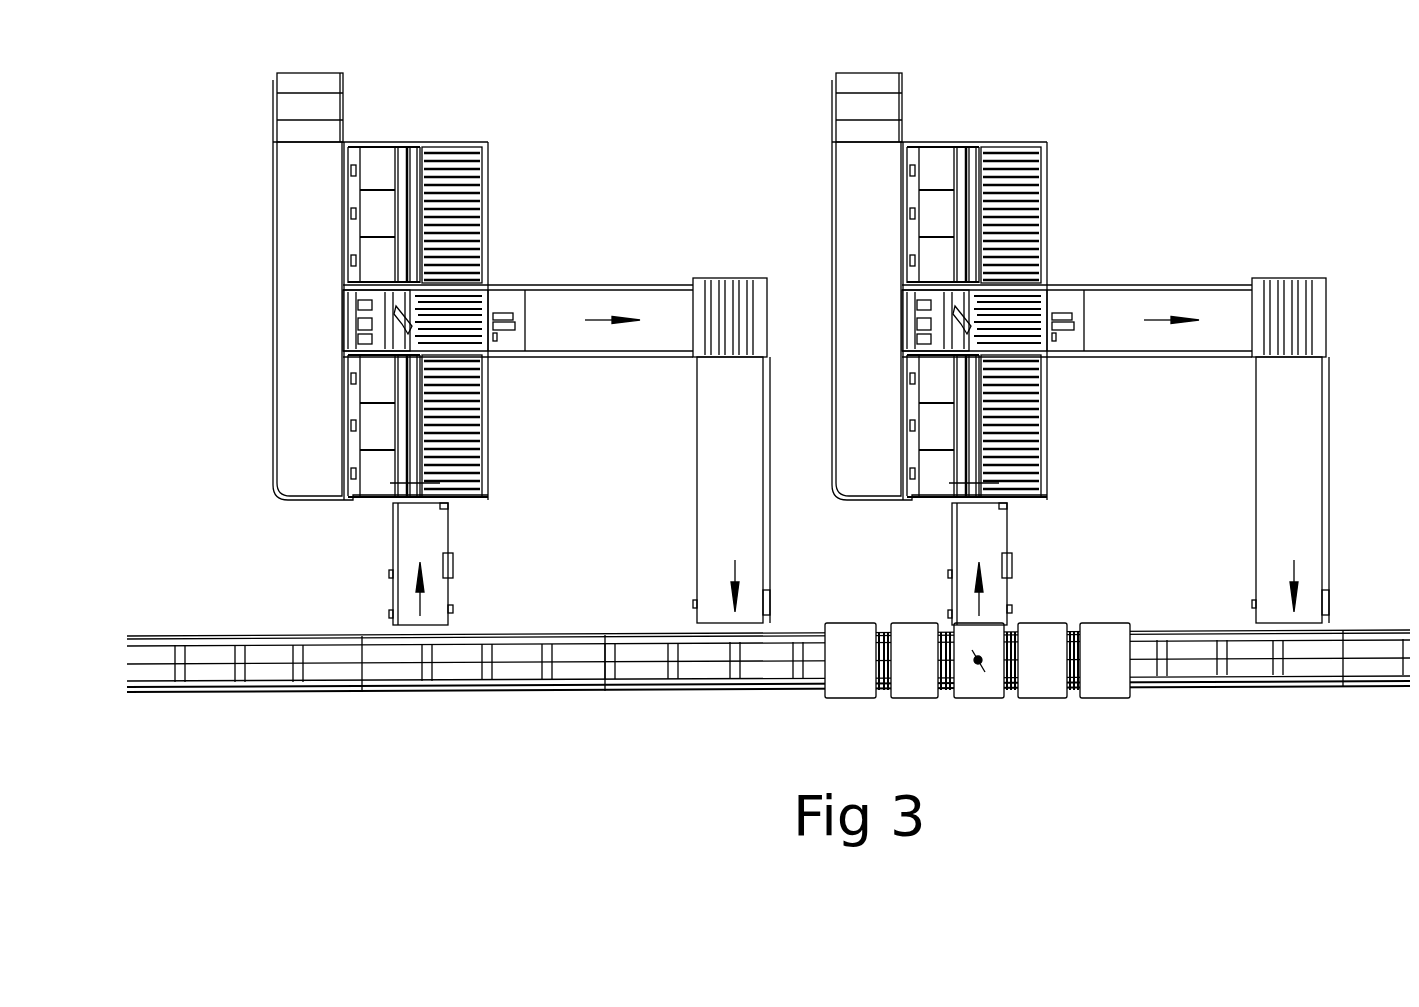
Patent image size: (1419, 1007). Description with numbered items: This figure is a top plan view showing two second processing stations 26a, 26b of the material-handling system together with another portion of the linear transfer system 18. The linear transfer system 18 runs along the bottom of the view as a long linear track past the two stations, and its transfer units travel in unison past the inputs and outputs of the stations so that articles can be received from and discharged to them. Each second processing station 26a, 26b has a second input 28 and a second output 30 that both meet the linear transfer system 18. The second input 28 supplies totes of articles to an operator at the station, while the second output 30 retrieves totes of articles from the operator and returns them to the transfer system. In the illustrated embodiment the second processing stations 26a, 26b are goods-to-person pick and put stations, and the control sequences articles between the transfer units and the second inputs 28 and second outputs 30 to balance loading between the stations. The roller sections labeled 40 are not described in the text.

The linear transfer system 18 is at (655, 697).
The second processing station 26a is at (1047, 133).
The second processing station 26b is at (487, 132).
The second input 28 is at (449, 536).
The second output 30 is at (767, 548).
The roller conveyor 40 is at (488, 232).